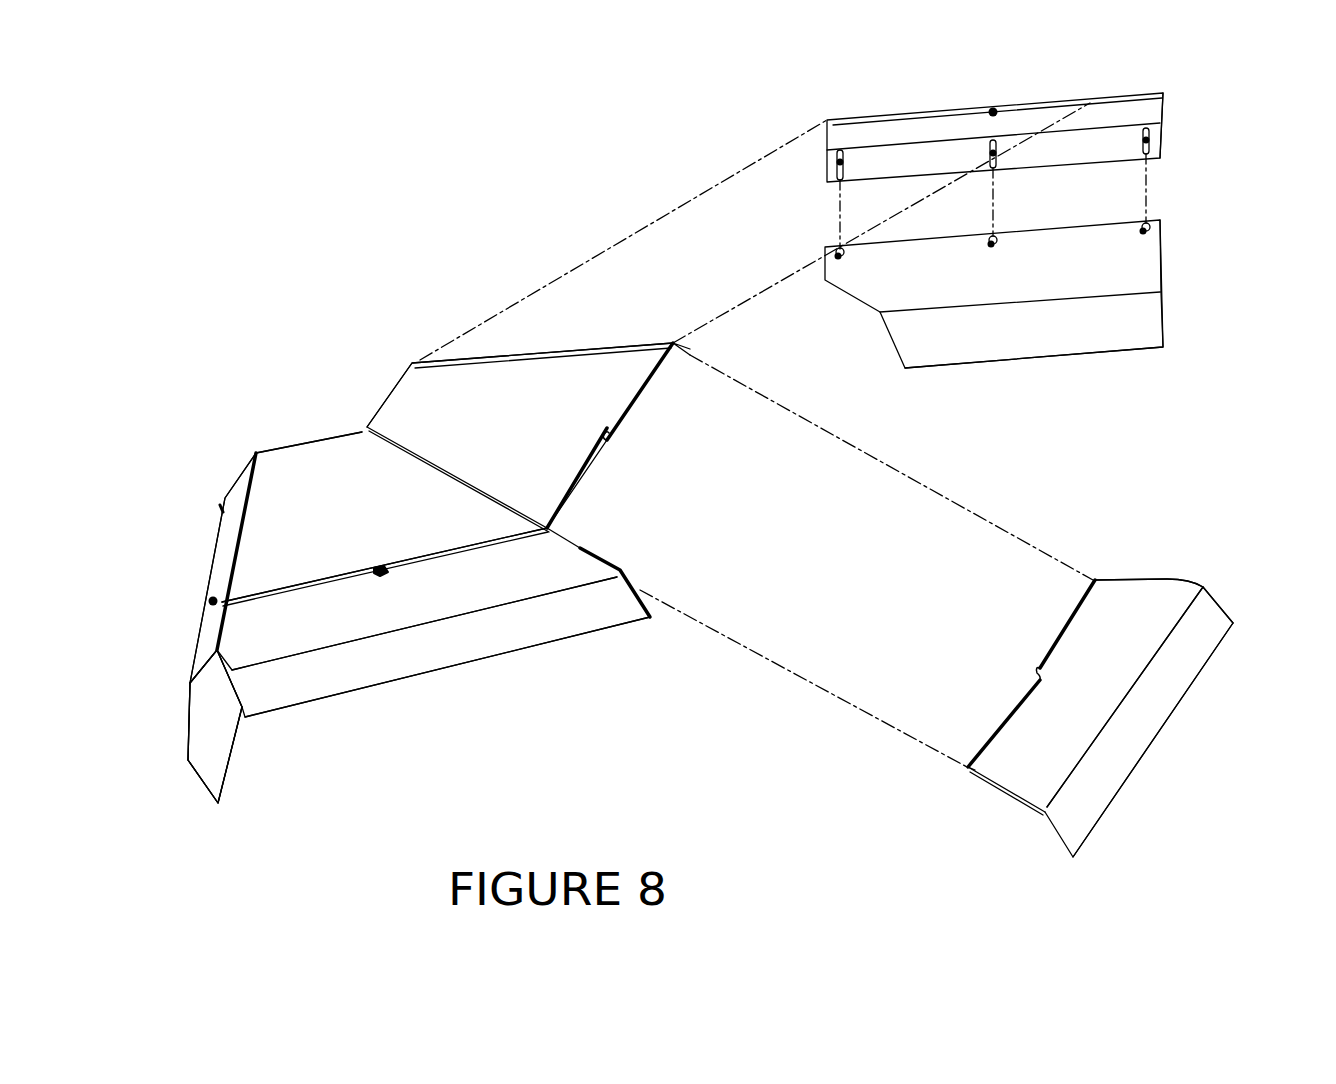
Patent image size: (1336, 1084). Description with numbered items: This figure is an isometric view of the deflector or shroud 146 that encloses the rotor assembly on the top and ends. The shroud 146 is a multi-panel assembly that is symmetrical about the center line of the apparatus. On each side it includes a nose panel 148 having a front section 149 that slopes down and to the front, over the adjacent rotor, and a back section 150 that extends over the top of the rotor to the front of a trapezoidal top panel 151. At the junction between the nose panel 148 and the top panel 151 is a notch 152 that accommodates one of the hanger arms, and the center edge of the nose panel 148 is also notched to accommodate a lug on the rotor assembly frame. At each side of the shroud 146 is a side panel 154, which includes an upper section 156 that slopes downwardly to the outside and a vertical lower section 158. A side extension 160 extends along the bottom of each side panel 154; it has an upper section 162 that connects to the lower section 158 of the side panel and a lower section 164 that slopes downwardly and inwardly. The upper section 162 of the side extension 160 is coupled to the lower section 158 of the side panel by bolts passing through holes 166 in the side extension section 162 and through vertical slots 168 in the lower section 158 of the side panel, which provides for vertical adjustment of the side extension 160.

The shroud 146 is at (302, 387).
The nose panel 148 is at (982, 810).
The front section 149 is at (483, 640).
The back section 150 is at (395, 610).
The top panel 151 is at (455, 383).
The notch 152 is at (378, 566).
The side panel 154 is at (1187, 100).
The upper section 156 is at (993, 110).
The lower section 158 is at (1157, 129).
The side extension 160 is at (1202, 291).
The upper section 162 is at (1153, 238).
The lower section 164 is at (1002, 343).
The holes 166 is at (1140, 231).
The vertical slots 168 is at (1143, 136).